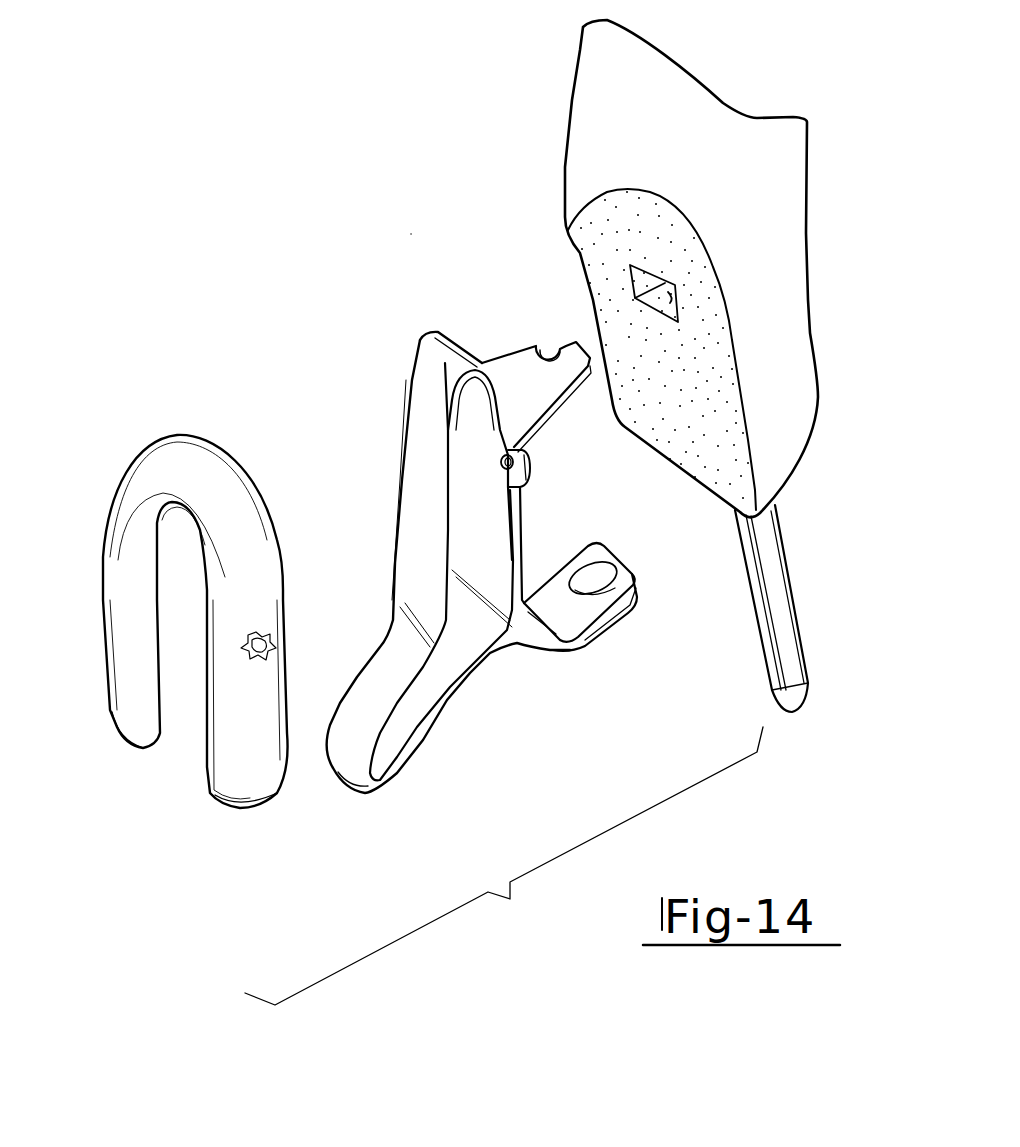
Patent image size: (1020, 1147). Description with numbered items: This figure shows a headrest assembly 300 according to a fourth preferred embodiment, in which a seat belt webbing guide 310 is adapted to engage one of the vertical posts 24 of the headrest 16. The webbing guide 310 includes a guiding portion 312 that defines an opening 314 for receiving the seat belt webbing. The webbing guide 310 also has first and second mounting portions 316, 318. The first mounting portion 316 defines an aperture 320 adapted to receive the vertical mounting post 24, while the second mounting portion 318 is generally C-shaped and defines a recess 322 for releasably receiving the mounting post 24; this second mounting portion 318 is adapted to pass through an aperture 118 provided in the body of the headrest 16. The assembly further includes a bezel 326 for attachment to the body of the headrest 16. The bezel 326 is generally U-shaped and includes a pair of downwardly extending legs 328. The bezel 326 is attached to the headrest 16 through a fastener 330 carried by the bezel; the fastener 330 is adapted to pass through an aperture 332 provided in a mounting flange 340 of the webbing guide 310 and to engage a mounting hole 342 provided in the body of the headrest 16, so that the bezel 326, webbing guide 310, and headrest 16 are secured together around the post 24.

The headrest assembly 300 is at (409, 233).
The headrest 16 is at (822, 400).
The mounting hole 342 is at (707, 337).
The aperture 118 is at (680, 303).
The vertical post 24 is at (798, 623).
The seat belt webbing guide 310 is at (404, 405).
The guiding portion 312 is at (403, 747).
The opening 314 is at (467, 633).
The first mounting portion 316 is at (603, 627).
The second mounting portion 318 is at (515, 352).
The aperture 320 is at (597, 572).
The recess 322 is at (562, 345).
The bezel 326 is at (197, 430).
The legs 328 is at (103, 683).
The fastener 330 is at (296, 626).
The aperture 332 is at (516, 459).
The mounting flange 340 is at (522, 484).